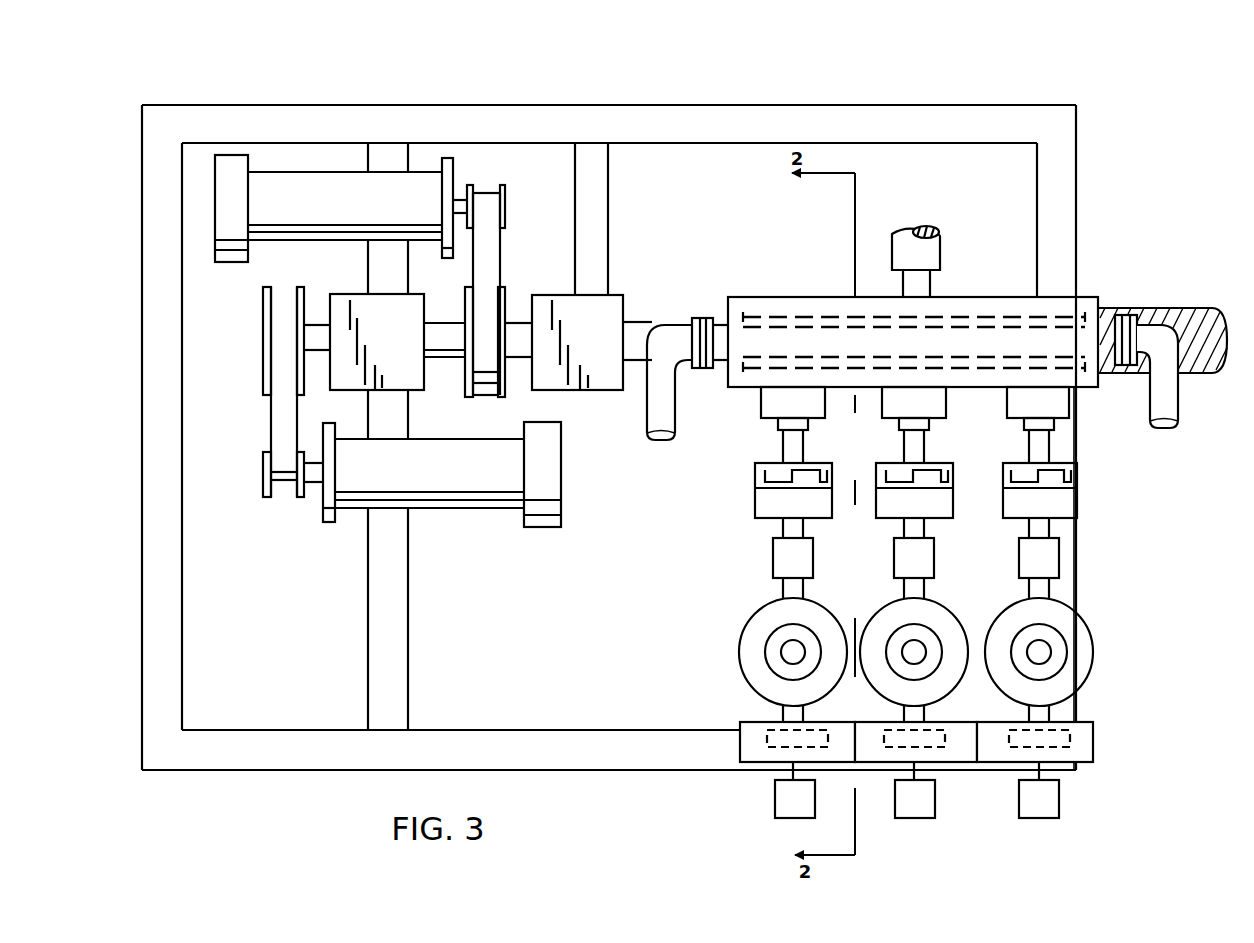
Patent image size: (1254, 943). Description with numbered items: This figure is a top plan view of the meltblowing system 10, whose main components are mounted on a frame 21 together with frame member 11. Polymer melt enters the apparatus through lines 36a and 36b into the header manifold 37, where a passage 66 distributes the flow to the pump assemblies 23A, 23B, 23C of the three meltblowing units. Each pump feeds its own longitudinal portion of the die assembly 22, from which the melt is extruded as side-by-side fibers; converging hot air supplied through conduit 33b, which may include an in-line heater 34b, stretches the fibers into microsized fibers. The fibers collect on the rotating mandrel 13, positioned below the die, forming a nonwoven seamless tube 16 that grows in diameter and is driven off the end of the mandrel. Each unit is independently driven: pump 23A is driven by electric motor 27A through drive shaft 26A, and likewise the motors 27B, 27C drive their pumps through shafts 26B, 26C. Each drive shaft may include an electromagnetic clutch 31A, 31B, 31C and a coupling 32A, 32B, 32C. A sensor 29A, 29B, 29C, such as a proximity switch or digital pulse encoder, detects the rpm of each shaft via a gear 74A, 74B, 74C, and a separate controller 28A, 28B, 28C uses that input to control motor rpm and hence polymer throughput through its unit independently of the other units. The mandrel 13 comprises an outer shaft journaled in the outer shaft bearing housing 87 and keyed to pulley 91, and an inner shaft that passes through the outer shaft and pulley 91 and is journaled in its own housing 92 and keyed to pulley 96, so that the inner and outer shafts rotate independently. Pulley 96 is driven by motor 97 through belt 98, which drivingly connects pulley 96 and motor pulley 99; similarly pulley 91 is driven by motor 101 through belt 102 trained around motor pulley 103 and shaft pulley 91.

The meltblowing system 10 is at (836, 90).
The frame 11 is at (395, 74).
The rotating mandrel 13 is at (640, 321).
The tube 16 is at (1162, 308).
The frame 21 is at (342, 729).
The die assembly 22 is at (995, 297).
The pump assembly 23A is at (761, 410).
The pump assembly 23B is at (882, 412).
The pump assembly 23C is at (1069, 404).
The drive shaft 26A is at (783, 590).
The drive shaft 26B is at (904, 590).
The drive shaft 26C is at (1059, 585).
The electric motor 27A is at (745, 626).
The electric motor 27B is at (952, 622).
The electric motor 27C is at (1095, 640).
The motor controller 28A is at (775, 799).
The motor controller 28B is at (935, 802).
The motor controller 28C is at (1059, 799).
The sensor 29A is at (740, 735).
The sensor 29B is at (893, 719).
The sensor 29C is at (1093, 747).
The electromagnetic clutch 31A is at (755, 478).
The electromagnetic clutch 31B is at (950, 466).
The electromagnetic clutch 31C is at (1077, 481).
The coupling 32A is at (773, 552).
The coupling 32B is at (934, 556).
The coupling 32C is at (1059, 552).
The hot air line 33b is at (934, 292).
The in-line heater 34b is at (942, 230).
The polymer melt line 36a is at (680, 333).
The polymer melt line 36b is at (1180, 400).
The header manifold 37 is at (815, 305).
The polymer passage 66 is at (855, 325).
The gear 74A is at (770, 740).
The gear 74B is at (950, 740).
The gear 74C is at (1080, 740).
The outer shaft bearing housing 87 is at (620, 294).
The pulley 91 is at (505, 303).
The housing 92 is at (352, 300).
The pulley 96 is at (263, 310).
The motor 97 is at (470, 512).
The belt 98 is at (270, 420).
The motor pulley 99 is at (263, 488).
The motor 101 is at (345, 170).
The belt 102 is at (503, 260).
The motor pulley 103 is at (505, 190).